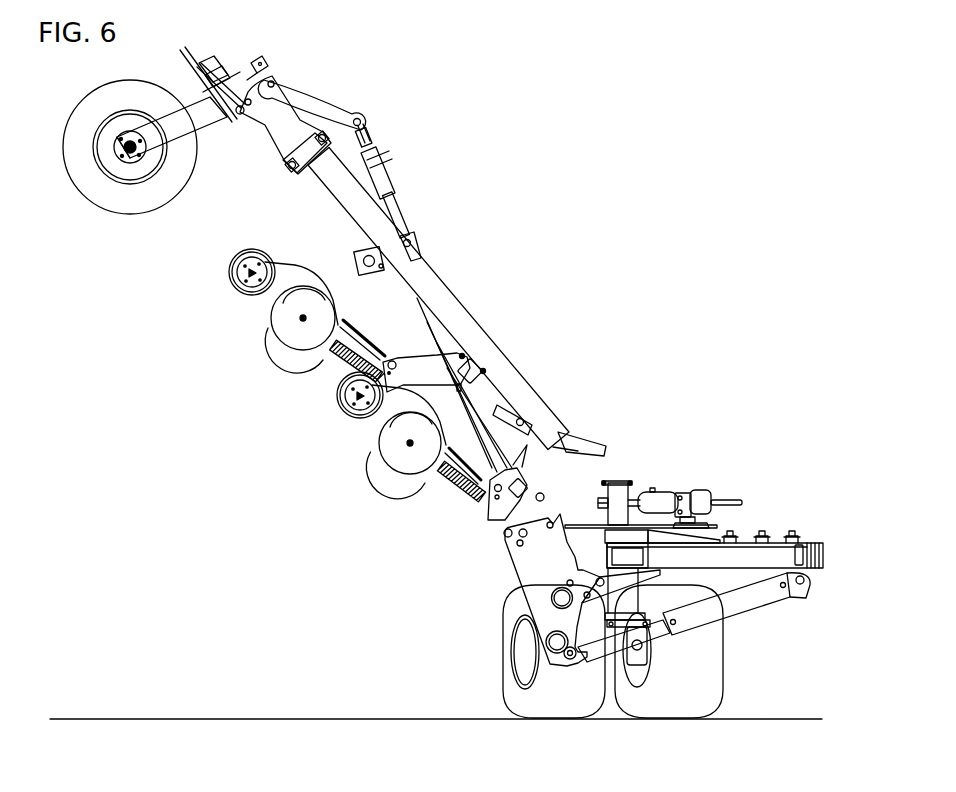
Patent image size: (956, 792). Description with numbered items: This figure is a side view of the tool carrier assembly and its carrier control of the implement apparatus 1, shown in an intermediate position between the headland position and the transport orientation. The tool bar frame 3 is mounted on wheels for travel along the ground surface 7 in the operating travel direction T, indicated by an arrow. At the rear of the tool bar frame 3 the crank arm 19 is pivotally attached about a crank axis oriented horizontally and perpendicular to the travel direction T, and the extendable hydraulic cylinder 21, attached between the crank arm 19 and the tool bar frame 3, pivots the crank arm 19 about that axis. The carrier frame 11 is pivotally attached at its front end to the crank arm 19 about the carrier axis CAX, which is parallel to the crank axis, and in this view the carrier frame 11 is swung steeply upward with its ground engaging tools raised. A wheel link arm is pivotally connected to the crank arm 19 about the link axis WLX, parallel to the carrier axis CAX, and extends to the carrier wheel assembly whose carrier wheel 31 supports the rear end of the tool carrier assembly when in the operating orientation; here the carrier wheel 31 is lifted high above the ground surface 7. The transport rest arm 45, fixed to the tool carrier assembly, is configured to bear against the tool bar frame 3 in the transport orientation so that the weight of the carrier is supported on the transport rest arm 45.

The implement apparatus 1 is at (687, 198).
The tool bar frame 3 is at (777, 542).
The ground surface 7 is at (322, 719).
The carrier frame 11 is at (455, 303).
The crank arm 19 is at (522, 567).
The extendable hydraulic cylinder 21 is at (748, 612).
The carrier wheel 31 is at (133, 213).
The transport rest arm 45 is at (583, 431).
The carrier axis CAX is at (550, 525).
The link axis WLX is at (508, 536).
The operating travel direction T is at (793, 613).